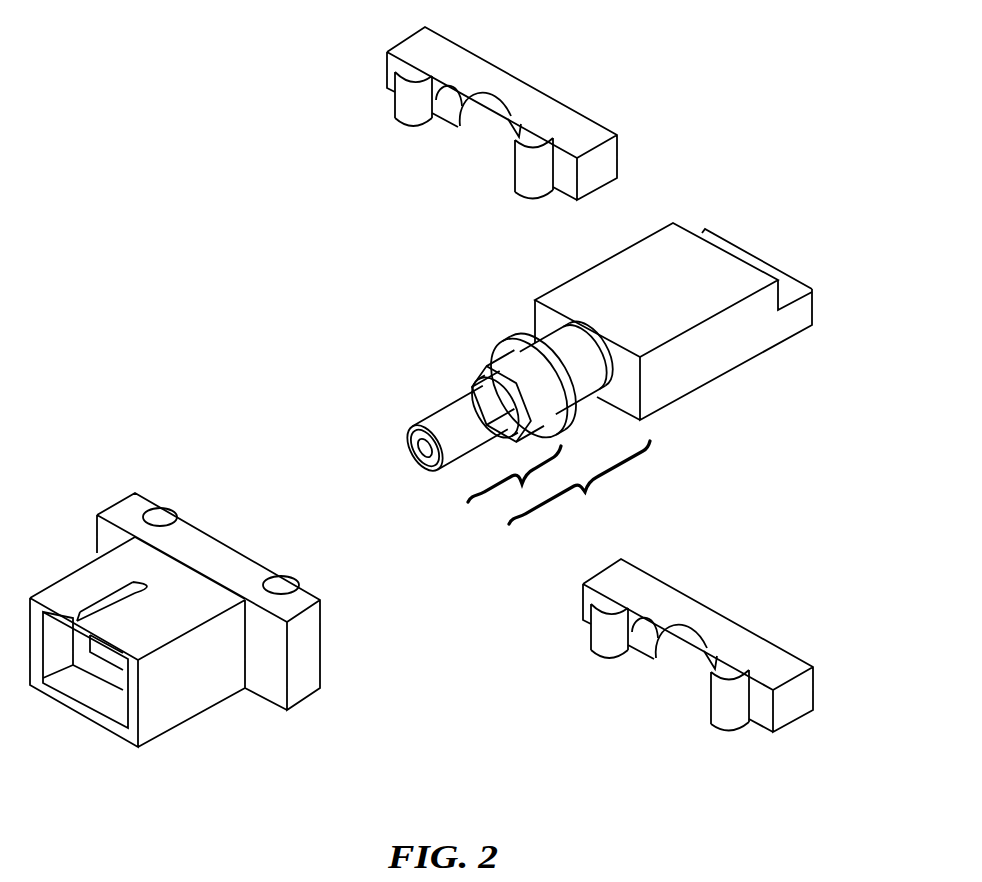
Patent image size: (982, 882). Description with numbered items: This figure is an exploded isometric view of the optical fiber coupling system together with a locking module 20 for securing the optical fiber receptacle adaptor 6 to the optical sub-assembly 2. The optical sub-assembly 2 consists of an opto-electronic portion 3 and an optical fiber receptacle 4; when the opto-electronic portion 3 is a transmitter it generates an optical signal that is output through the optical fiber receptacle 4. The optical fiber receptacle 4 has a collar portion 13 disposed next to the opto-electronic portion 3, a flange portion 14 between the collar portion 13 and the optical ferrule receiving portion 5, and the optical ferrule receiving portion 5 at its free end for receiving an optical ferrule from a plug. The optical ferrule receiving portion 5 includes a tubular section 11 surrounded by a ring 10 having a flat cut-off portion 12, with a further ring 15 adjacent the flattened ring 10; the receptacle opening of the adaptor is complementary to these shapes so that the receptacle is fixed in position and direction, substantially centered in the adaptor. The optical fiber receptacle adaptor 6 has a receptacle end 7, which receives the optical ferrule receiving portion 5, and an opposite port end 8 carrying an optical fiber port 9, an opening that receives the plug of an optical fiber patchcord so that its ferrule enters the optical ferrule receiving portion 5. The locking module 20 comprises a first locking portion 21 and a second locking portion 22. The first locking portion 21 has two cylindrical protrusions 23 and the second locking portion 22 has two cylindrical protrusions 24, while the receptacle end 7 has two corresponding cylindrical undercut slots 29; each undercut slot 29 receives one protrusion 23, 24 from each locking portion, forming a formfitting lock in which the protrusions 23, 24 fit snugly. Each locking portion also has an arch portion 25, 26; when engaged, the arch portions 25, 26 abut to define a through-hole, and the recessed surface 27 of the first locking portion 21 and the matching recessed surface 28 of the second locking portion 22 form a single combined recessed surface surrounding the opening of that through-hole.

The optical sub-assembly 2 is at (538, 268).
The opto-electronic portion 3 is at (720, 367).
The optical fiber receptacle 4 is at (579, 482).
The optical ferrule receiving portion 5 is at (514, 480).
The optical fiber receptacle adaptor 6 is at (127, 470).
The receptacle end 7 is at (110, 510).
The port end 8 is at (200, 703).
The optical fiber port 9 is at (102, 683).
The ring 10 is at (525, 420).
The tubular section 11 is at (445, 410).
The flat cut-off portion 12 is at (482, 374).
The collar portion 13 is at (587, 397).
The flange portion 14 is at (517, 335).
The further ring 15 is at (478, 366).
The locking module 20 is at (790, 630).
The first locking portion 21 is at (543, 100).
The second locking portion 22 is at (790, 717).
The cylindrical protrusions 23 is at (528, 178).
The cylindrical protrusions 24 is at (727, 715).
The arch portion 25 is at (473, 110).
The arch portion 26 is at (690, 632).
The recessed surface 27 is at (460, 107).
The recessed surface 28 is at (652, 625).
The cylindrical undercut slots 29 is at (286, 590).